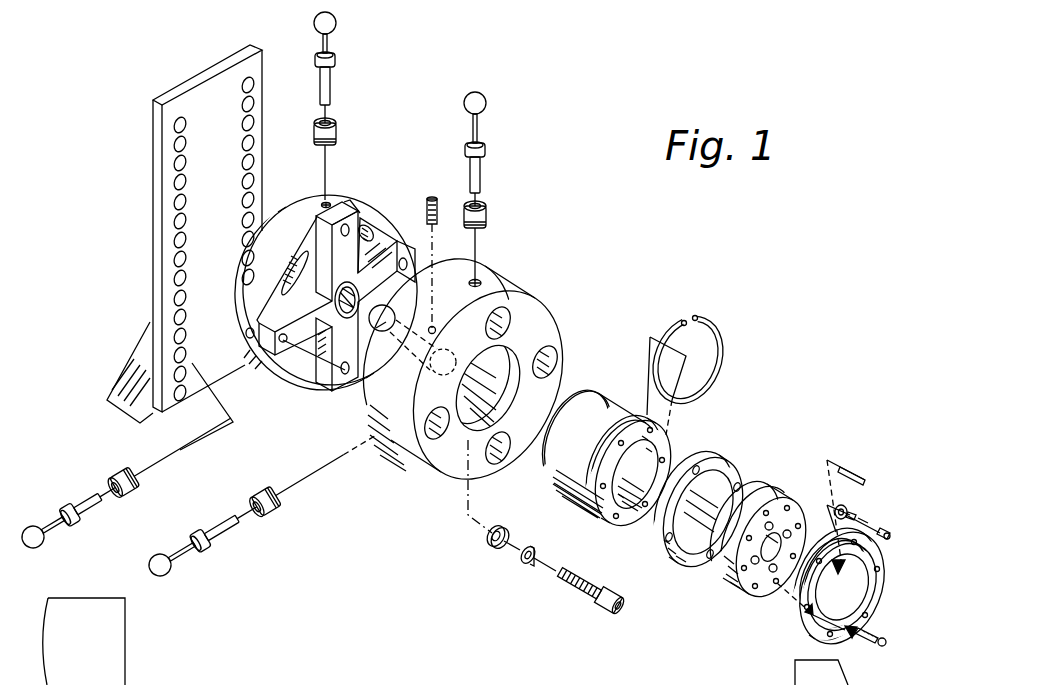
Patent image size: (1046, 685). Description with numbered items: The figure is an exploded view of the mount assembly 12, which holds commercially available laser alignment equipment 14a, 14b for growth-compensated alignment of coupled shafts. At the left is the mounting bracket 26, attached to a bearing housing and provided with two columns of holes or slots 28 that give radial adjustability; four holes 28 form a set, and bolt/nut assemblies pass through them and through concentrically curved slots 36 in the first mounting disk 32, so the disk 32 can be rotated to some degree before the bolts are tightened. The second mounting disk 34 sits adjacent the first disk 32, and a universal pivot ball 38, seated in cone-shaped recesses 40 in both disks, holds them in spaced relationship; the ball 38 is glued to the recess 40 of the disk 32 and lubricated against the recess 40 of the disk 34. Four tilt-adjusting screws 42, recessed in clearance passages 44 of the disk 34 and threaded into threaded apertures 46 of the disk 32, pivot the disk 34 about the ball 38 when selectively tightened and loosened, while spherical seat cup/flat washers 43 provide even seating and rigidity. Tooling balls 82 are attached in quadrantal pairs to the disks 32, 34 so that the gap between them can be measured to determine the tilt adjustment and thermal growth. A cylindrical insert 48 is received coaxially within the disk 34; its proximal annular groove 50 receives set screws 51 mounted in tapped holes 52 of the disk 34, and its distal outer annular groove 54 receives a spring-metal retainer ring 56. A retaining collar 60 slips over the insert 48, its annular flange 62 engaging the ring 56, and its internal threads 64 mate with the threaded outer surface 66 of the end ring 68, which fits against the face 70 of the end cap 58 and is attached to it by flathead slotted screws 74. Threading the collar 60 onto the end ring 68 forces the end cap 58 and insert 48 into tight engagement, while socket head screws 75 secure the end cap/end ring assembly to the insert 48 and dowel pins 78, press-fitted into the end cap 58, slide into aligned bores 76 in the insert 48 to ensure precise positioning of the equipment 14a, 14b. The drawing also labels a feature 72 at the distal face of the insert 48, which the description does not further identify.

The mount assembly 12 is at (537, 210).
The mounting bracket 26 is at (213, 113).
The holes or slots 28 is at (182, 177).
The first mounting disk 32 is at (347, 197).
The second mounting disk 34 is at (540, 329).
The concentrically curved slot 36 is at (296, 236).
The universal pivot ball 38 is at (378, 335).
The cone-shaped recess 40 is at (405, 226).
The tilt-adjusting screw 42 is at (566, 590).
The spherical seat cup/flat washers 43 is at (520, 552).
The passages 44 is at (440, 470).
The threaded apertures 46 is at (289, 348).
The cylindrical insert 48 is at (610, 412).
The annular groove 50 is at (548, 470).
The set screw 51 is at (432, 197).
The tapped holes 52 is at (392, 338).
The outer annular groove 54 is at (596, 500).
The spring-metal retainer ring 56 is at (712, 316).
The end cap 58 is at (737, 572).
The retaining collar 60 is at (672, 540).
The annular flange 62 is at (718, 477).
The internal threads 64 is at (703, 562).
The threaded outer surface 66 is at (790, 592).
The end ring 68 is at (862, 590).
The face 70 is at (757, 585).
The bushing face 72 is at (627, 519).
The flathead slotted screws 74 is at (866, 642).
The socket head screws 75 is at (872, 530).
The aligned bores 76 is at (672, 470).
The dowel pins 78 is at (852, 466).
The tooling balls 82 is at (464, 98).
The laser alignment equipment 14a is at (606, 684).
The laser alignment equipment 14b is at (349, 673).